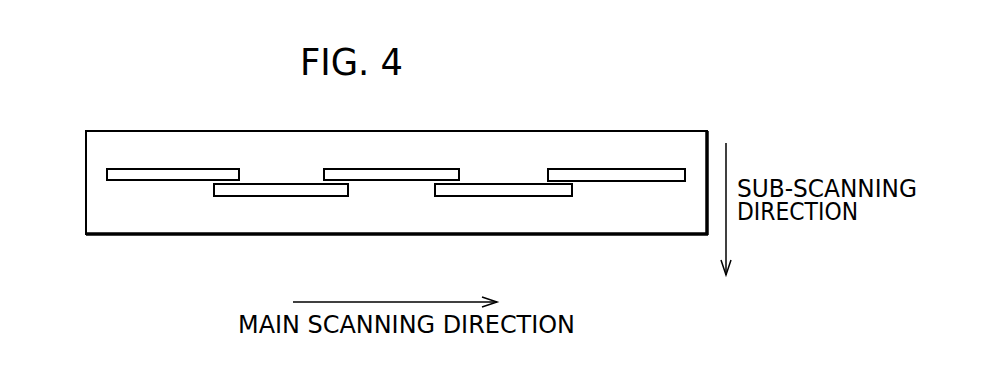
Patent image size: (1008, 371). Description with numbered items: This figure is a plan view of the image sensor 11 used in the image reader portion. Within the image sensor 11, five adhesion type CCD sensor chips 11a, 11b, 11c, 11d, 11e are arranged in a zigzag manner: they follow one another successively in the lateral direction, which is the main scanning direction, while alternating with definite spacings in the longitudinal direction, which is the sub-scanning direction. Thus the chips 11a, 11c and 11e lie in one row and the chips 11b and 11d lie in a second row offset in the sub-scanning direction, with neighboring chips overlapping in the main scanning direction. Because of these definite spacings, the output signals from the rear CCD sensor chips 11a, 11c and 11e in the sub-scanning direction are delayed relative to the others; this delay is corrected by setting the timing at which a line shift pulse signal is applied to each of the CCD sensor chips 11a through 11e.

The image sensor 11 is at (622, 131).
The CCD sensor chip 11a is at (166, 181).
The CCD sensor chip 11b is at (285, 196).
The CCD sensor chip 11c is at (388, 181).
The CCD sensor chip 11d is at (497, 196).
The CCD sensor chip 11e is at (610, 181).